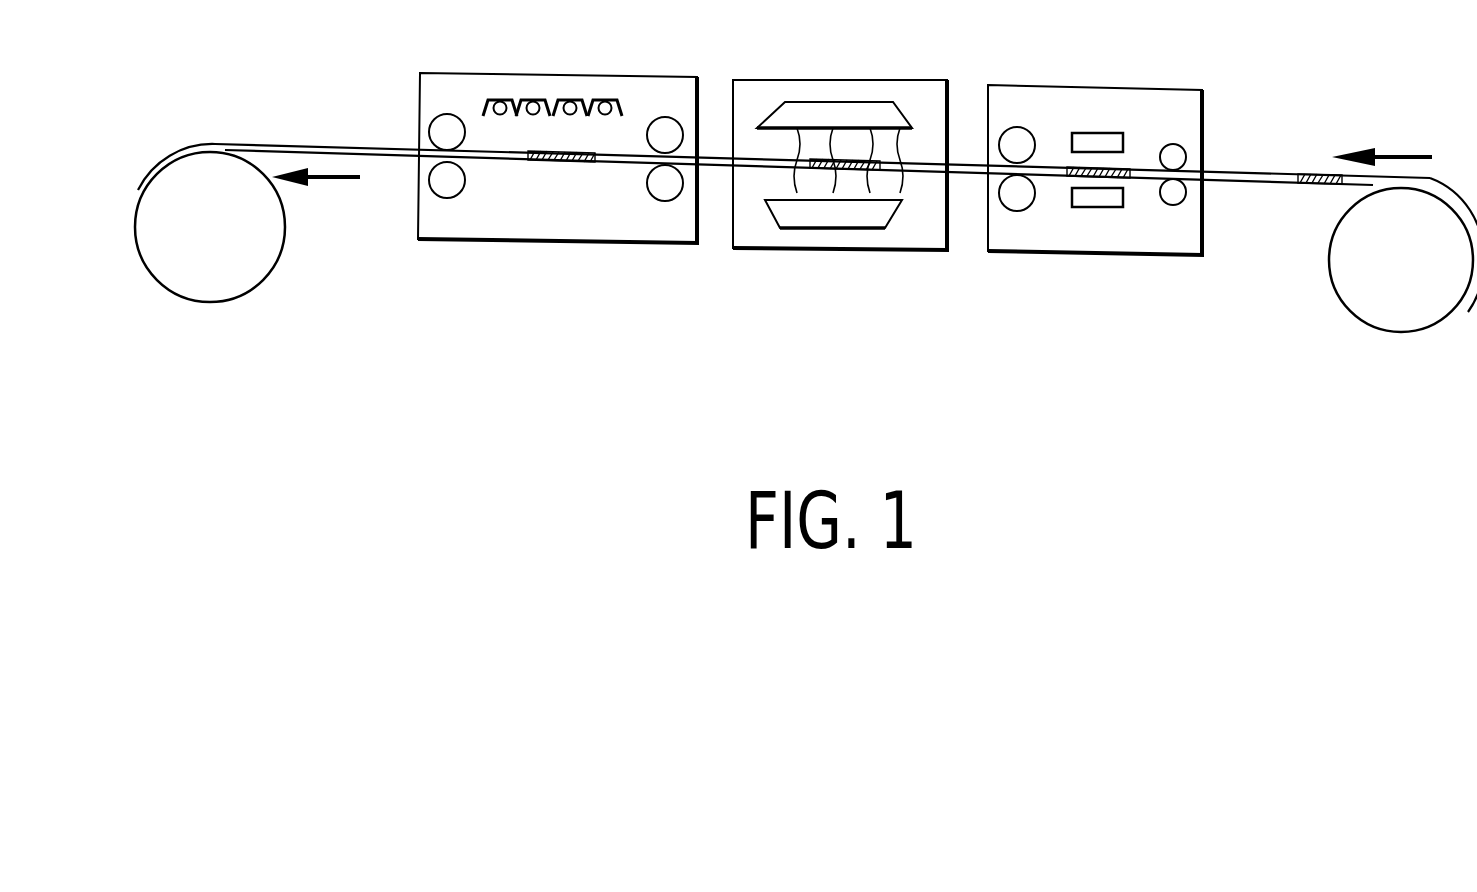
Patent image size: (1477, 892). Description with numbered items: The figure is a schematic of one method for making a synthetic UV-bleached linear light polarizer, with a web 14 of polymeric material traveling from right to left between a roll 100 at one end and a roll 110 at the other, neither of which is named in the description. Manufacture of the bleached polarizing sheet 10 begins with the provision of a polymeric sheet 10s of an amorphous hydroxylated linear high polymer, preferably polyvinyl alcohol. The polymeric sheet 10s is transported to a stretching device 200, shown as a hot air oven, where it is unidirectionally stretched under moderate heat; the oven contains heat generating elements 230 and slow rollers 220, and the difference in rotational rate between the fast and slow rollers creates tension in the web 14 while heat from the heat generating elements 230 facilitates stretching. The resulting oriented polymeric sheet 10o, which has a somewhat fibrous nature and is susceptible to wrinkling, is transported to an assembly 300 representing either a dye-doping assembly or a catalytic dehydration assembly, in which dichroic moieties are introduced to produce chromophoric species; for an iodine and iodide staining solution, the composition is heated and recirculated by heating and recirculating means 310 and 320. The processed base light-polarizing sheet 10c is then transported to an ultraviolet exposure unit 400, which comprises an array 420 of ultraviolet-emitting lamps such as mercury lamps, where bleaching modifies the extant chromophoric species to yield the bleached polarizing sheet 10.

The supply roll of substrate web 100 is at (1420, 274).
The take-up roll 110 is at (226, 241).
The web 14 is at (1253, 185).
The polymeric sheet 10s is at (1308, 183).
The stretching device 200 is at (1152, 257).
The slow rollers 220 is at (1177, 147).
The heat generating elements 230 is at (1103, 132).
The oriented polymeric sheet 10o is at (1070, 177).
The base light-polarizing sheet 10c is at (873, 162).
The assembly 300 is at (857, 250).
The heating and recirculating means 320 is at (782, 100).
The heating and recirculating means 310 is at (778, 233).
The ultraviolet exposure unit 400 is at (648, 247).
The array of ultraviolet-emitting lamps 420 is at (618, 110).
The bleached polarizing sheet 10 is at (537, 165).